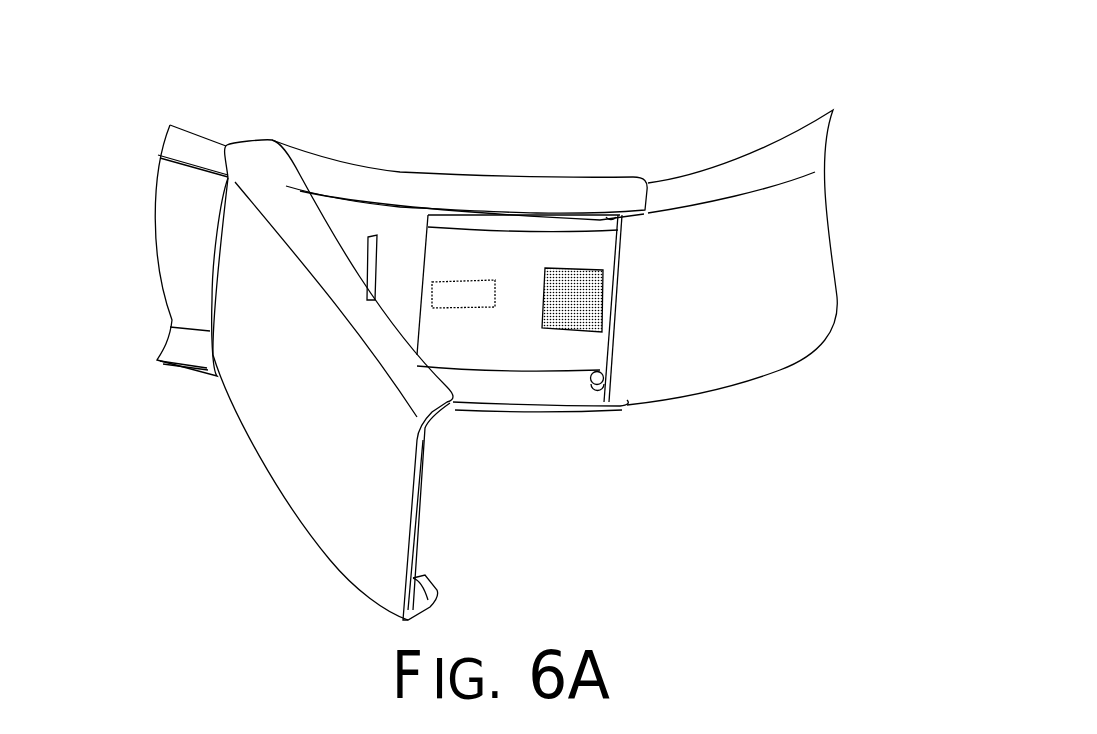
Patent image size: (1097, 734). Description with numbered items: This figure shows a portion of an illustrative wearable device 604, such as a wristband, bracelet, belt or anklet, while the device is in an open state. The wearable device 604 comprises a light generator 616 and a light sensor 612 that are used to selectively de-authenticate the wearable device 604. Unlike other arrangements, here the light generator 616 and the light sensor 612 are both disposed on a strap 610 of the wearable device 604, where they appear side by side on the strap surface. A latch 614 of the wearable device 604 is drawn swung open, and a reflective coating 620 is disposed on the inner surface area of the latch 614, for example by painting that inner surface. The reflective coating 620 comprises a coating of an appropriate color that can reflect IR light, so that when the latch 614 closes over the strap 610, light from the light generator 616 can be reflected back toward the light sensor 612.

The wearable device 604 is at (796, 47).
The strap 610 is at (815, 350).
The light sensor 612 is at (563, 267).
The latch 614 is at (273, 410).
The light generator 616 is at (468, 280).
The reflective coating 620 is at (423, 473).